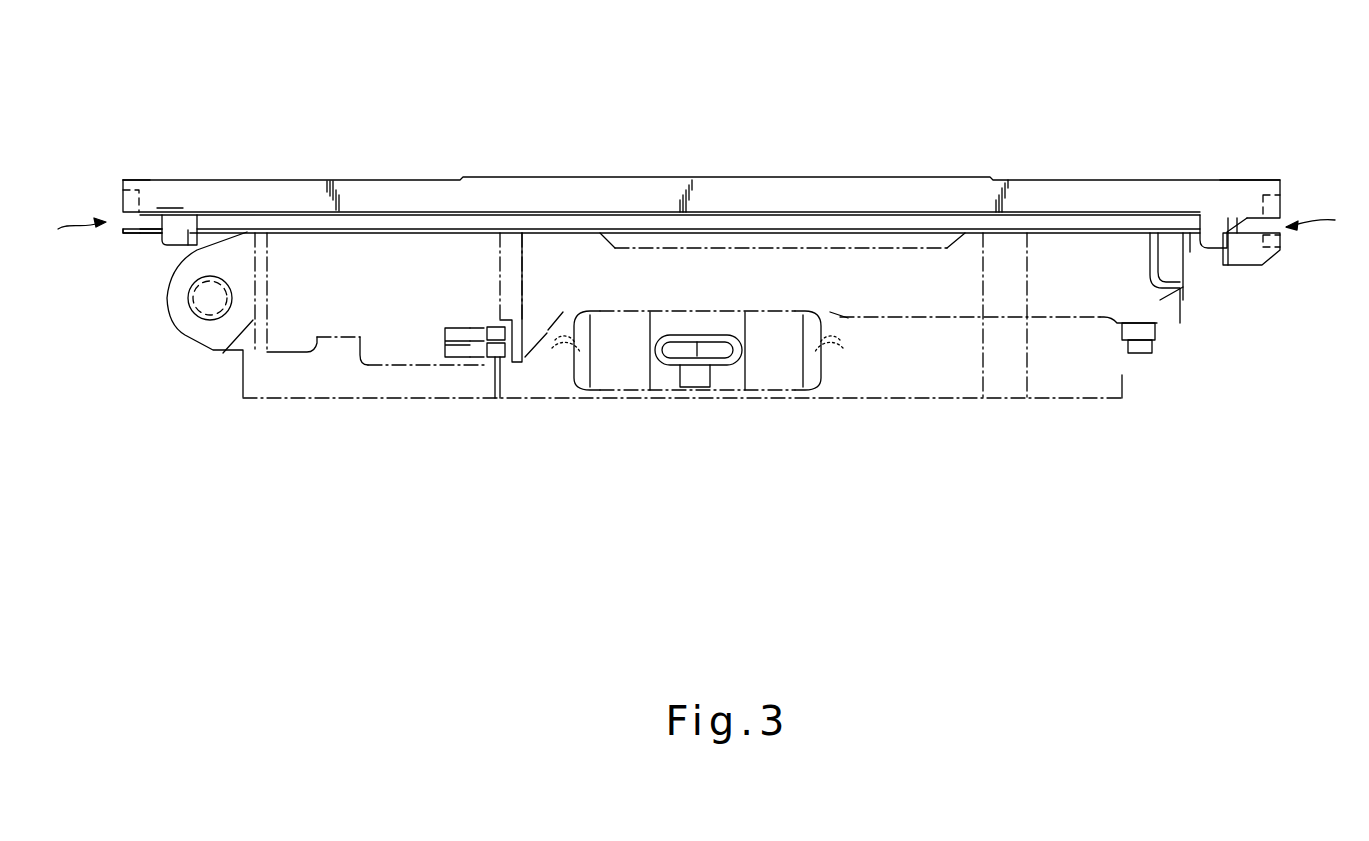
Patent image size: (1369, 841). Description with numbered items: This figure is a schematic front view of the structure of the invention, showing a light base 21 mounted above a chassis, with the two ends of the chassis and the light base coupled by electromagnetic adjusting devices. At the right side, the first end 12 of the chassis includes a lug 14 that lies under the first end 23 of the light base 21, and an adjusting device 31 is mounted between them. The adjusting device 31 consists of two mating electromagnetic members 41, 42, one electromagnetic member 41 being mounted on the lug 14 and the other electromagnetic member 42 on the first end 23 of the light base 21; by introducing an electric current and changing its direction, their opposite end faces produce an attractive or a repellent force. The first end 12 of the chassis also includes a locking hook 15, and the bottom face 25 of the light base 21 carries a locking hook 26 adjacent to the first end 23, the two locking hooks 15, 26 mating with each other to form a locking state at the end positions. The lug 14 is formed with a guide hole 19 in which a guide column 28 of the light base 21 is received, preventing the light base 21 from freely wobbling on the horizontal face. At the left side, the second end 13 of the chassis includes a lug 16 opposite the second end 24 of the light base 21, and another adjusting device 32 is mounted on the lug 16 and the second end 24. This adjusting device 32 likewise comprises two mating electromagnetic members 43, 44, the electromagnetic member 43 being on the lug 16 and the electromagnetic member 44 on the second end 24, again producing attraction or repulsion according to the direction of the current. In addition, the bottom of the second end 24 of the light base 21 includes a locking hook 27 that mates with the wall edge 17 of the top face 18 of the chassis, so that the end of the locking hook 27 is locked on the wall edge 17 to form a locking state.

The first end of the chassis 12 is at (1170, 297).
The second end of the chassis 13 is at (222, 355).
The lug 14 is at (1262, 258).
The locking hook 15 is at (1192, 268).
The lug 16 is at (147, 237).
The wall edge 17 is at (196, 233).
The top face of the chassis 18 is at (385, 232).
The guide hole 19 is at (1243, 220).
The light base 21 is at (567, 150).
The first end of the light base 23 is at (1233, 181).
The second end of the light base 24 is at (137, 178).
The bottom face of the light base 25 is at (1088, 212).
The locking hook 26 is at (1212, 230).
The locking hook 27 is at (172, 222).
The guide column 28 is at (1245, 218).
The adjusting device 31 is at (1327, 214).
The adjusting device 32 is at (82, 169).
The electromagnetic member 41 is at (1282, 244).
The electromagnetic member 42 is at (1283, 197).
The electromagnetic member 43 is at (124, 237).
The electromagnetic member 44 is at (123, 198).